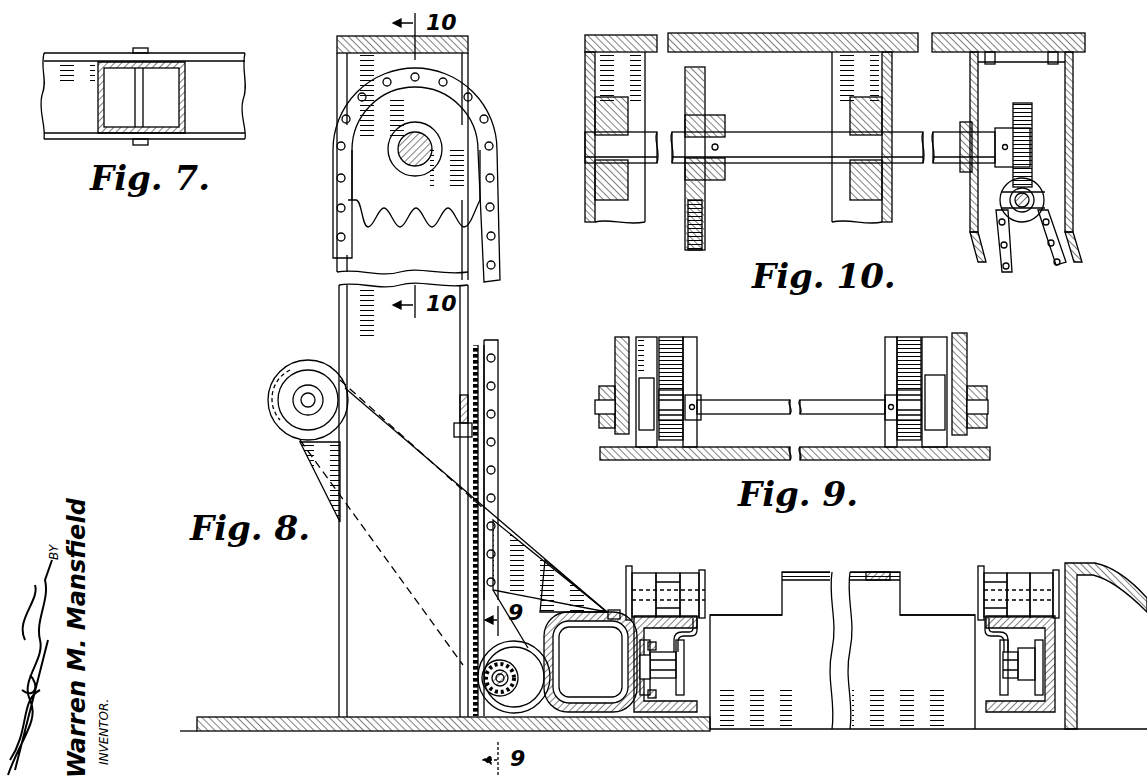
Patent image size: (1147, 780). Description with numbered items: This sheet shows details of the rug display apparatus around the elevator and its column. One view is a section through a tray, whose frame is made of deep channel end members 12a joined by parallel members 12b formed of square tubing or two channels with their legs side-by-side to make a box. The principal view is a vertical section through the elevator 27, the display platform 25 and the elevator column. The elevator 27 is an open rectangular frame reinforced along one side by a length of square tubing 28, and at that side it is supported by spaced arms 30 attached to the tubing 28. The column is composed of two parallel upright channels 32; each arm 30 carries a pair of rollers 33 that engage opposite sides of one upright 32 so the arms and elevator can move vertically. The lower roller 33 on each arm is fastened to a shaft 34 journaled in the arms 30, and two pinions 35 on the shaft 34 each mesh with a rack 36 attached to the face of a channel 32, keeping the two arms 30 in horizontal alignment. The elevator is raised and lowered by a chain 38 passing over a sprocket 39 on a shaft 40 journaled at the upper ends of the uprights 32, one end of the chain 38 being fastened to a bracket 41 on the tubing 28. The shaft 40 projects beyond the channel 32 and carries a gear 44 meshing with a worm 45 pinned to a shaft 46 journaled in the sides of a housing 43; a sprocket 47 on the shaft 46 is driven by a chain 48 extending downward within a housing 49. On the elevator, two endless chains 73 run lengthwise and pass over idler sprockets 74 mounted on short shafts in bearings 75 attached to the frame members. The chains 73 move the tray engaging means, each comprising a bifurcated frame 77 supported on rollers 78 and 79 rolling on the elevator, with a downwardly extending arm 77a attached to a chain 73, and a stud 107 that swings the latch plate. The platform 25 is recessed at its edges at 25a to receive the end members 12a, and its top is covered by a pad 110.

In FIG. 7, the end member 12a is at (230, 97).
In FIG. 7, the parallel member 12b is at (98, 118).
In FIG. 8, the display platform 25 is at (808, 587).
In FIG. 8, the recess 25a is at (920, 582).
In FIG. 8, the elevator 27 is at (673, 714).
In FIG. 8, the square tubing 28 is at (604, 692).
In FIG. 8, the arm 30 is at (523, 556).
In FIG. 9, the arm 30 is at (620, 361).
In FIG. 8, the upright channel 32 is at (404, 376).
In FIG. 9, the upright channel 32 is at (694, 351).
In FIG. 10, the upright channel 32 is at (630, 215).
In FIG. 8, the roller 33 is at (292, 410).
In FIG. 9, the roller 33 is at (650, 432).
In FIG. 8, the shaft 34 is at (500, 690).
In FIG. 9, the shaft 34 is at (770, 406).
In FIG. 8, the pinion 35 is at (482, 678).
In FIG. 9, the pinion 35 is at (676, 397).
In FIG. 8, the rack 36 is at (476, 528).
In FIG. 9, the rack 36 is at (670, 340).
In FIG. 8, the chain 38 is at (340, 224).
In FIG. 10, the chain 38 is at (706, 228).
In FIG. 8, the sprocket 39 is at (357, 159).
In FIG. 10, the sprocket 39 is at (693, 100).
In FIG. 8, the shaft 40 is at (425, 140).
In FIG. 10, the shaft 40 is at (783, 132).
In FIG. 8, the bracket 41 is at (548, 603).
In FIG. 10, the housing 43 is at (1074, 180).
In FIG. 10, the gear 44 is at (1033, 122).
In FIG. 10, the worm 45 is at (1010, 203).
In FIG. 10, the shaft 46 is at (1034, 203).
In FIG. 10, the sprocket 47 is at (1037, 265).
In FIG. 10, the chain 48 is at (1008, 275).
In FIG. 10, the housing 49 is at (978, 256).
In FIG. 8, the endless chain 73 is at (685, 684).
In FIG. 8, the idler sprocket 74 is at (690, 662).
In FIG. 8, the bearing 75 is at (653, 683).
In FIG. 8, the bifurcated frame 77 is at (628, 573).
In FIG. 8, the downwardly extending arm 77a is at (703, 613).
In FIG. 8, the roller 78 is at (665, 575).
In FIG. 8, the roller 79 is at (688, 573).
In FIG. 8, the stud 107 is at (617, 611).
In FIG. 8, the pad 110 is at (880, 576).